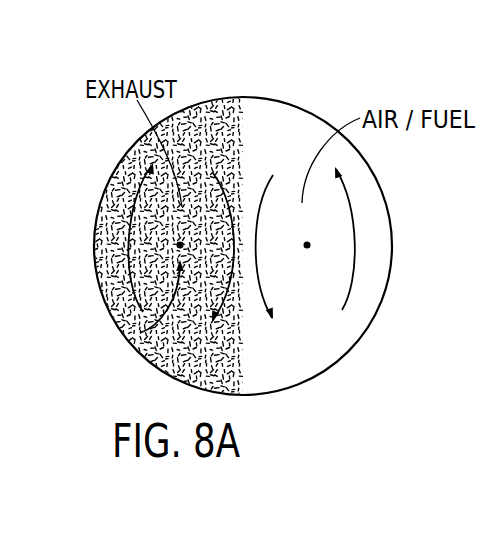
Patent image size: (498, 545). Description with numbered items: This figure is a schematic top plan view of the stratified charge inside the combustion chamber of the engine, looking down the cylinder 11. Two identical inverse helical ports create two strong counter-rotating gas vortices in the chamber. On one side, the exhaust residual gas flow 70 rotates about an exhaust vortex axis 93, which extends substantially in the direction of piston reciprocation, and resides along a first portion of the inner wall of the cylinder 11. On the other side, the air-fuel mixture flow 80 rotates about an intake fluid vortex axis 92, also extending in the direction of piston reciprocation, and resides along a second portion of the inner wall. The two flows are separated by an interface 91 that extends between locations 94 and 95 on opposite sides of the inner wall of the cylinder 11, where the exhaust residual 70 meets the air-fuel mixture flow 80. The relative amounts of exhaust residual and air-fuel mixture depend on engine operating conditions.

The cylinder 11 is at (301, 88).
The exhaust residual gas flow 70 is at (112, 269).
The air-fuel mixture flow 80 is at (333, 338).
The interface 91 is at (242, 110).
The intake fluid vortex axis 92 is at (307, 262).
The exhaust vortex axis 93 is at (140, 333).
The location 94 is at (243, 395).
The location 95 is at (223, 97).